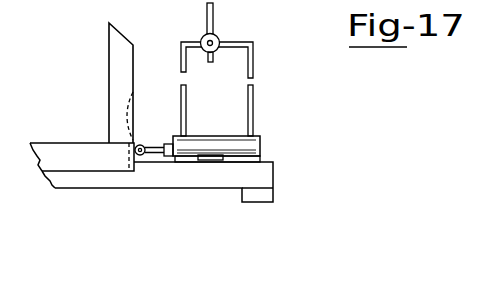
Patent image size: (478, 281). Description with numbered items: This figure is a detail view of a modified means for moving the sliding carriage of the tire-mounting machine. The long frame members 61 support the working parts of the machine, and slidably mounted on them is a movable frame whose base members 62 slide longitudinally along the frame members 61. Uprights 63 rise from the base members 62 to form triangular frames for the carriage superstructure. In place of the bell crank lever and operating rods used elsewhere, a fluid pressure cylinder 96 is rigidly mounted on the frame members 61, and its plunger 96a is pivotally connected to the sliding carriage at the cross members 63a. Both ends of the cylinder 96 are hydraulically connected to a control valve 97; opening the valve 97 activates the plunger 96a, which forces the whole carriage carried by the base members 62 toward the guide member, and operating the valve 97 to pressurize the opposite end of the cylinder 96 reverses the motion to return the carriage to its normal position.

The frame members 61 is at (167, 180).
The base members 62 is at (92, 163).
The uprights 63 is at (112, 88).
The cross members 63a is at (131, 93).
The fluid pressure cylinder 96 is at (198, 135).
The plunger 96a is at (143, 145).
The control valve 97 is at (218, 36).